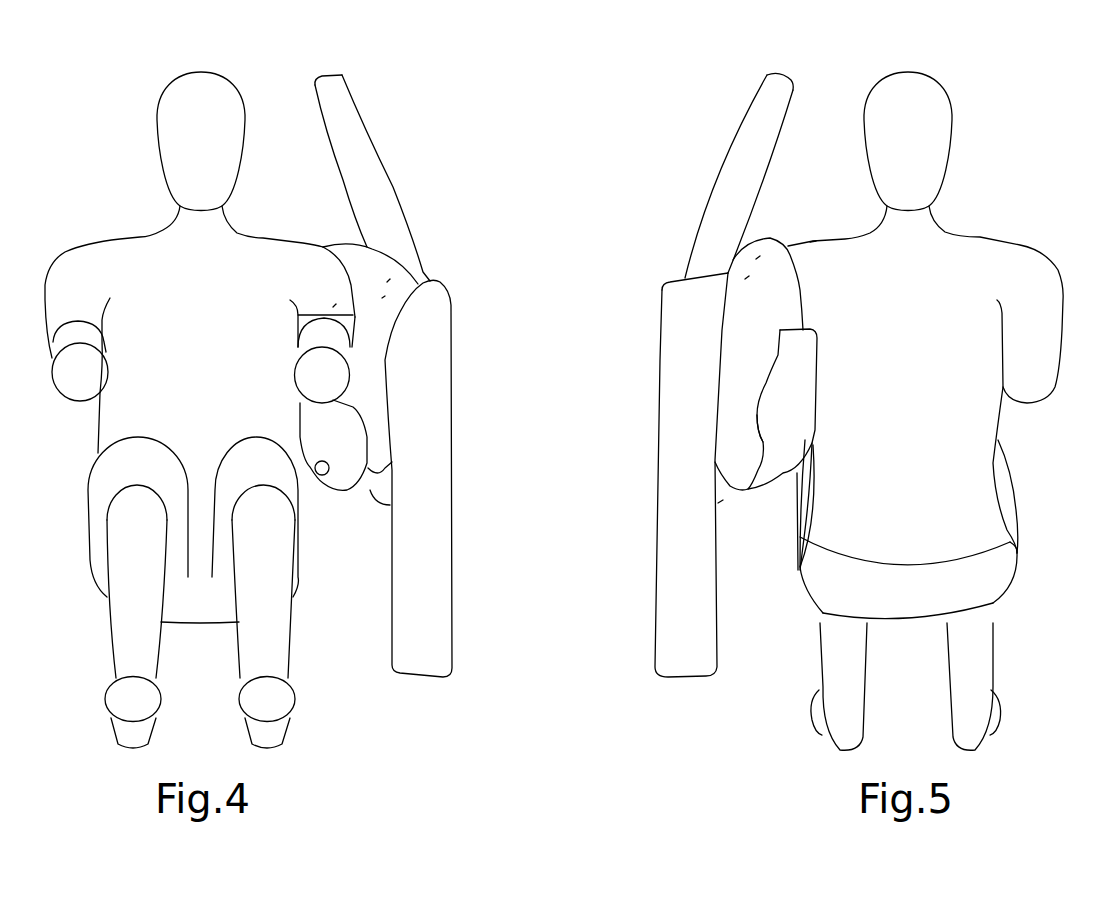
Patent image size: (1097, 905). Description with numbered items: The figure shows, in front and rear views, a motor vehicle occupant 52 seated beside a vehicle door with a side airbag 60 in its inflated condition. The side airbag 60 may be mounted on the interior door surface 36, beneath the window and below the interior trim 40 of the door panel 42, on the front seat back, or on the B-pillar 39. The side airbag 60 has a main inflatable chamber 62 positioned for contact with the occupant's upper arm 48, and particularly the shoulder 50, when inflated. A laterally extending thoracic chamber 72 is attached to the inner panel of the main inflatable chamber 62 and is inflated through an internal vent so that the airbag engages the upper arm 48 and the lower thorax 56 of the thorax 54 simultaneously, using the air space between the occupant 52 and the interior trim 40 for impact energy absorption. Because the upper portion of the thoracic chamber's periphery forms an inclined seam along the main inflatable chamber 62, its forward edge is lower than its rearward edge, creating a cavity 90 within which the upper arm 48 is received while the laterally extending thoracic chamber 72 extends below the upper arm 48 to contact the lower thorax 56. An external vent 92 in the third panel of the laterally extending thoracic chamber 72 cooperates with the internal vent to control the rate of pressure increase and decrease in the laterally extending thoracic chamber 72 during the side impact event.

In FIG. 4, the interior door surface 36 is at (392, 568).
In FIG. 5, the interior door surface 36 is at (718, 582).
In FIG. 4, the B-pillar 39 is at (365, 133).
In FIG. 5, the B-pillar 39 is at (735, 157).
In FIG. 4, the interior trim 40 is at (397, 303).
In FIG. 5, the interior trim 40 is at (737, 304).
In FIG. 4, the door panel 42 is at (385, 488).
In FIG. 5, the door panel 42 is at (723, 495).
In FIG. 4, the upper arm 48 is at (333, 307).
In FIG. 4, the shoulder 50 is at (322, 262).
In FIG. 5, the shoulder 50 is at (815, 253).
In FIG. 4, the motor vehicle occupant 52 is at (147, 260).
In FIG. 5, the motor vehicle occupant 52 is at (963, 260).
In FIG. 4, the thorax 54 is at (292, 338).
In FIG. 5, the thorax 54 is at (817, 353).
In FIG. 4, the lower thorax 56 is at (300, 427).
In FIG. 5, the lower thorax 56 is at (818, 425).
In FIG. 4, the side airbag 60 is at (387, 282).
In FIG. 5, the side airbag 60 is at (748, 277).
In FIG. 4, the main inflatable chamber 62 is at (382, 298).
In FIG. 5, the main inflatable chamber 62 is at (758, 257).
In FIG. 4, the laterally extending thoracic chamber 72 is at (350, 447).
In FIG. 5, the laterally extending thoracic chamber 72 is at (772, 470).
In FIG. 4, the cavity 90 is at (298, 313).
In FIG. 4, the external vent 92 is at (328, 474).